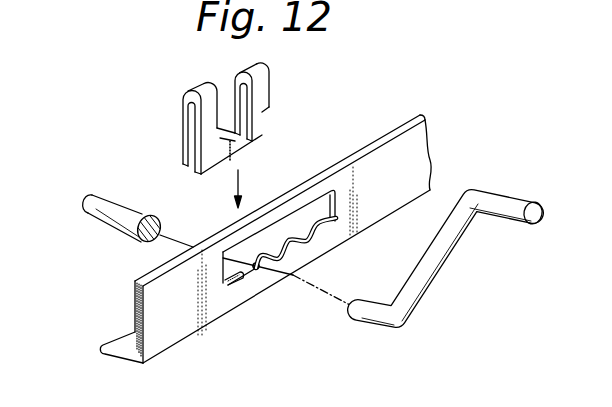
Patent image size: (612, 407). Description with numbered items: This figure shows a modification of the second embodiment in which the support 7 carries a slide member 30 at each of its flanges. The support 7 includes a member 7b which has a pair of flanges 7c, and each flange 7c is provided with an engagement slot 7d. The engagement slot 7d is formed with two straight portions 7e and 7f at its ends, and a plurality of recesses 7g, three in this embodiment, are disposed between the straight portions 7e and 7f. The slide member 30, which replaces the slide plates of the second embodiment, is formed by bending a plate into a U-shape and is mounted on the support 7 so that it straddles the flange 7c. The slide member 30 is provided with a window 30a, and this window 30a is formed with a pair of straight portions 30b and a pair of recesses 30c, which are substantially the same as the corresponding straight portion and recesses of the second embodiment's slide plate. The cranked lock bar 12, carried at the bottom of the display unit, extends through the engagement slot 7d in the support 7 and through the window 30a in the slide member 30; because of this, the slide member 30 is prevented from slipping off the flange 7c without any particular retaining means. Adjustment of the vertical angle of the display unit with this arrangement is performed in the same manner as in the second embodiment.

The slide member 30 is at (189, 92).
The window 30a is at (237, 78).
The straight portions 30b is at (201, 174).
The recesses 30c is at (262, 135).
The support 7 is at (237, 261).
The member 7b is at (110, 357).
The flange 7c is at (133, 312).
The engagement slot 7d is at (317, 203).
The straight portion 7e is at (230, 283).
The straight portion 7f is at (331, 225).
The recesses 7g is at (255, 270).
The lock bar 12 is at (444, 258).